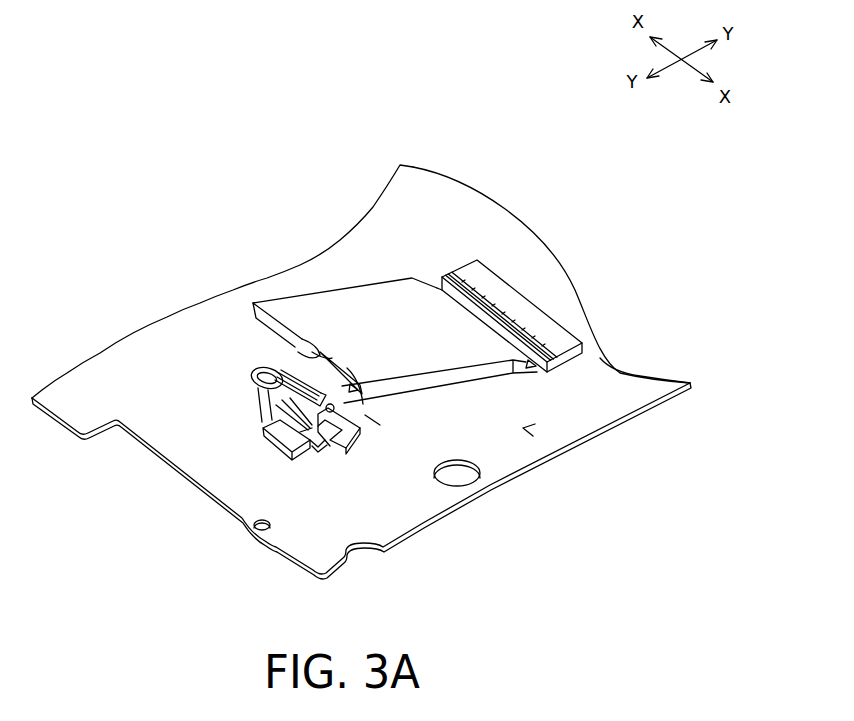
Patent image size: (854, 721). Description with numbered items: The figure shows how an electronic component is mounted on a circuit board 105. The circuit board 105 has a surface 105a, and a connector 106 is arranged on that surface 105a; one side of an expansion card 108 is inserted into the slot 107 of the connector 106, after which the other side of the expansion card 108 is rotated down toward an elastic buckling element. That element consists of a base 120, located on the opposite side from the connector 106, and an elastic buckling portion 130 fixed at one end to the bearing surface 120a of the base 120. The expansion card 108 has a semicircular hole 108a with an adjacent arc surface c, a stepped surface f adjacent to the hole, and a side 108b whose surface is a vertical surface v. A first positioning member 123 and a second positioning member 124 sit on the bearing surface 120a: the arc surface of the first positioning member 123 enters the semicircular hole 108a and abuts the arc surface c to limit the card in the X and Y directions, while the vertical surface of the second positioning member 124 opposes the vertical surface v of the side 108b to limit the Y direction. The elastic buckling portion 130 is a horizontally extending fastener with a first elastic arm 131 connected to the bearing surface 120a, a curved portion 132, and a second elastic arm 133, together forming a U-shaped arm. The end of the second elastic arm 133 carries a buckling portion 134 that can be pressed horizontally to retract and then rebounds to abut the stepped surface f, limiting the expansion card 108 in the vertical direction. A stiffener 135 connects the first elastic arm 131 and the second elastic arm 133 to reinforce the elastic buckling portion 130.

The circuit board 105 is at (613, 380).
The surface 105a is at (523, 428).
The connector 106 is at (505, 307).
The slot 107 is at (540, 378).
The expansion card 108 is at (386, 305).
The semicircular hole 108a is at (305, 332).
The side 108b is at (360, 400).
The base 120 is at (275, 433).
The bearing surface 120a is at (362, 420).
The first positioning member 123 is at (313, 440).
The second positioning member 124 is at (327, 420).
The elastic buckling portion 130 is at (168, 361).
The first elastic arm 131 is at (262, 397).
The curved portion 132 is at (253, 370).
The second elastic arm 133 is at (290, 383).
The buckling portion 134 is at (295, 385).
The stiffener 135 is at (262, 410).
The arc surface c is at (325, 345).
The stepped surface f is at (333, 350).
The vertical surface v is at (347, 368).